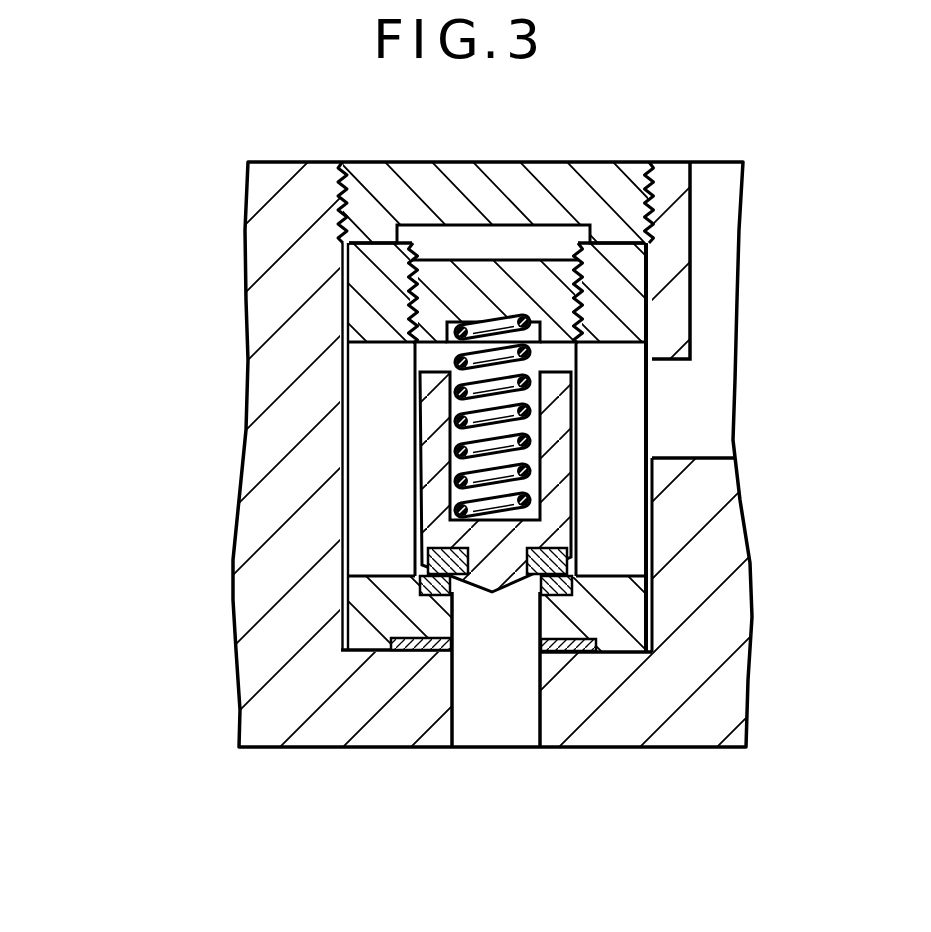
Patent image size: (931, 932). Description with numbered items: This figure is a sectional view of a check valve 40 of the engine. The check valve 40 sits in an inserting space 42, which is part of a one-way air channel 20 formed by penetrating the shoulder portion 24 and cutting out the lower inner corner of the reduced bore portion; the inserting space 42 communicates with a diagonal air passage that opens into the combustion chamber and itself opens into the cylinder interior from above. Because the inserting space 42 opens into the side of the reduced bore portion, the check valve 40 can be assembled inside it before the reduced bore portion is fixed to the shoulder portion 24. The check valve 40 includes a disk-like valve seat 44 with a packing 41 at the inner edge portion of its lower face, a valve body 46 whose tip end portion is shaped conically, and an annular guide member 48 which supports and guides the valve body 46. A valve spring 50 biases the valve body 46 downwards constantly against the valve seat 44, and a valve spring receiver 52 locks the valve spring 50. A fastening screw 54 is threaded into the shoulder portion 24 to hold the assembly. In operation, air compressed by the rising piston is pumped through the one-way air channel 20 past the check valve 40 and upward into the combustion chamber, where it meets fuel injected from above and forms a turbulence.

The one-way air channel 20 is at (696, 377).
The shoulder portion 24 is at (275, 630).
The check valve 40 is at (138, 415).
The packing 41 is at (413, 644).
The inserting space 42 is at (480, 622).
The valve seat 44 is at (637, 616).
The valve body 46 is at (430, 432).
The annular guide member 48 is at (368, 488).
The valve spring 50 is at (545, 431).
The valve spring receiver 52 is at (426, 295).
The fastening screw 54 is at (632, 204).